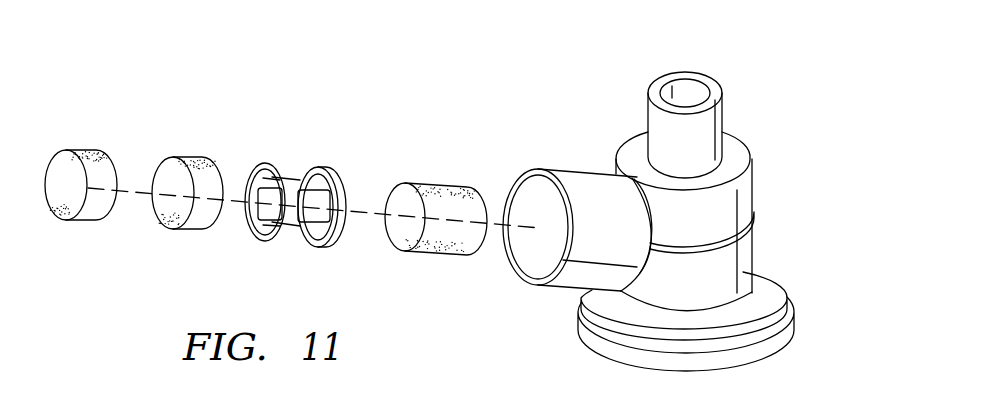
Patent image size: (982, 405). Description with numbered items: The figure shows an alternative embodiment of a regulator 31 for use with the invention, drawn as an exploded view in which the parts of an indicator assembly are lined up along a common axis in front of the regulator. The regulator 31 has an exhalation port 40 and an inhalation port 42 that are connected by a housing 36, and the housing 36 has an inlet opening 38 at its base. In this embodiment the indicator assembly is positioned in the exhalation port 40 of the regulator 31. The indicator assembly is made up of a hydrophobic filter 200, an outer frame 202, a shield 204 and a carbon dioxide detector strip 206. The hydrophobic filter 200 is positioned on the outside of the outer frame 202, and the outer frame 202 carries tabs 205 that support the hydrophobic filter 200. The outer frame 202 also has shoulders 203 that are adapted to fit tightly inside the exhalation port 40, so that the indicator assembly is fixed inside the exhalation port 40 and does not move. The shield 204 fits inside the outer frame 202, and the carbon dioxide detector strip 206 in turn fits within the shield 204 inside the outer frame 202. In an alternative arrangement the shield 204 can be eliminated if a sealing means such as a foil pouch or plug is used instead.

The regulator 31 is at (530, 326).
The housing 36 is at (772, 263).
The inlet opening 38 is at (785, 312).
The exhalation port 40 is at (570, 172).
The inhalation port 42 is at (697, 74).
The hydrophobic filter 200 is at (442, 182).
The outer frame 202 is at (267, 240).
The shoulders 203 is at (317, 167).
The shield 204 is at (180, 232).
The tabs 205 is at (310, 233).
The carbon dioxide detector strip 206 is at (85, 222).